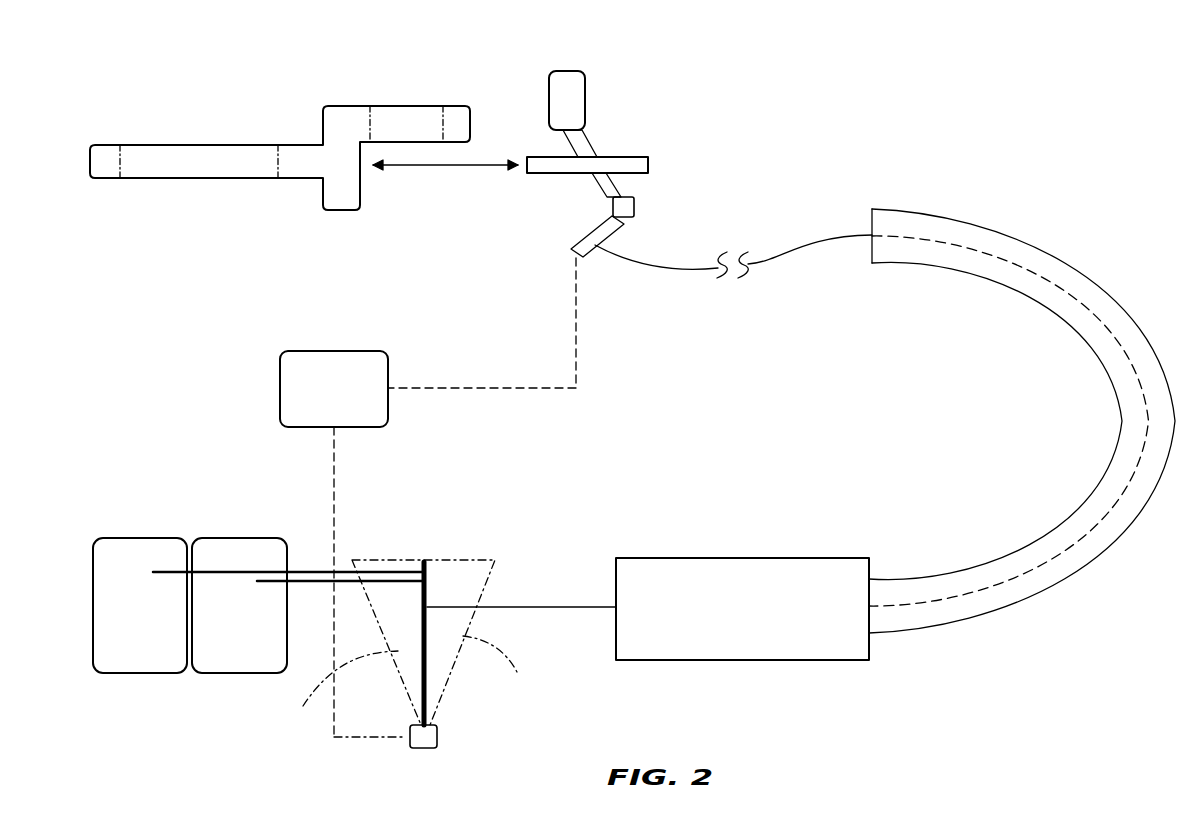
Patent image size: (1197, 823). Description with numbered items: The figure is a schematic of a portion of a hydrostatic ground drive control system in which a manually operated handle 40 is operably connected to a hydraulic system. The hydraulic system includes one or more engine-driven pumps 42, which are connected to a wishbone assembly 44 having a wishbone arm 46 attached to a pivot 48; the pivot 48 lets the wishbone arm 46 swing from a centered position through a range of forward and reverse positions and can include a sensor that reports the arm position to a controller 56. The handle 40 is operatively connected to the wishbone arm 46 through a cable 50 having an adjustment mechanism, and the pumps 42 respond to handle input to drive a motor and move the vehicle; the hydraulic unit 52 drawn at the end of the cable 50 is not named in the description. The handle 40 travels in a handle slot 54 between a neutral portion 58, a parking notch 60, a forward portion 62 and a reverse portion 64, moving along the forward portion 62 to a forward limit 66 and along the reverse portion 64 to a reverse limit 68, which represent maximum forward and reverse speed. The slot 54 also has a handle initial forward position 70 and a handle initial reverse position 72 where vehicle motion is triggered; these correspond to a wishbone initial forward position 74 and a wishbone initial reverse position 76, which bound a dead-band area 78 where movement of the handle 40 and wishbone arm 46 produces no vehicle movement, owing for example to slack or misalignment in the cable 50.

The handle 40 is at (595, 70).
The pumps 42 is at (220, 527).
The wishbone assembly 44 is at (429, 540).
The wishbone arm 46 is at (428, 663).
The pivot 48 is at (418, 748).
The cable 50 is at (1106, 427).
The master cylinder 52 is at (817, 668).
The handle slot 54 is at (206, 118).
The controller 56 is at (280, 382).
The neutral portion 58 is at (340, 175).
The parking notch 60 is at (342, 212).
The forward portion 62 is at (100, 140).
The reverse portion 64 is at (452, 100).
The forward limit 66 is at (120, 165).
The reverse limit 68 is at (443, 118).
The handle initial forward position 70 is at (278, 165).
The handle initial reverse position 72 is at (370, 118).
The wishbone initial forward position 74 is at (340, 688).
The wishbone initial reverse position 76 is at (503, 667).
The dead-band area 78 is at (467, 568).